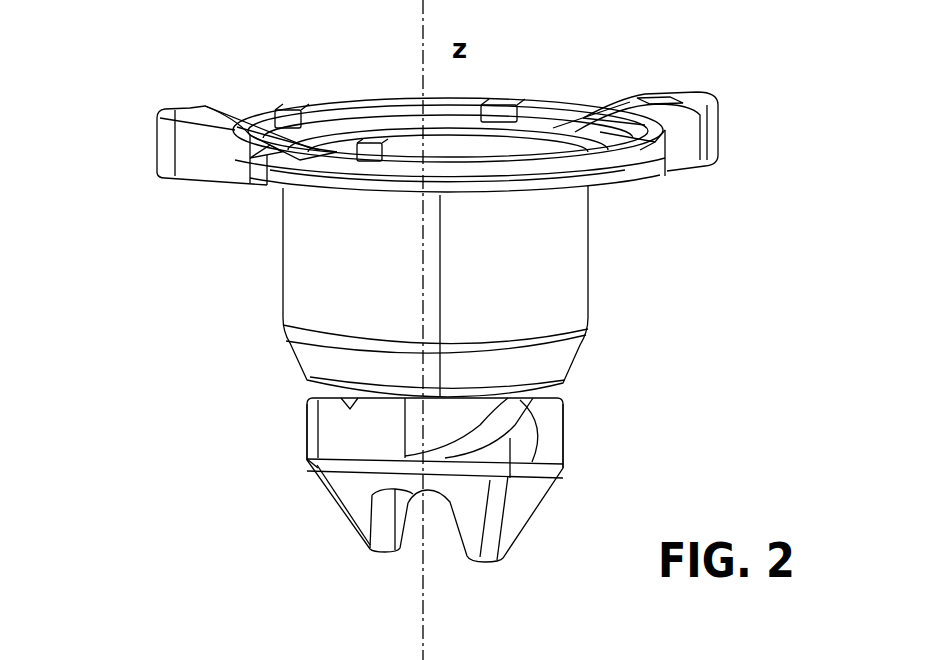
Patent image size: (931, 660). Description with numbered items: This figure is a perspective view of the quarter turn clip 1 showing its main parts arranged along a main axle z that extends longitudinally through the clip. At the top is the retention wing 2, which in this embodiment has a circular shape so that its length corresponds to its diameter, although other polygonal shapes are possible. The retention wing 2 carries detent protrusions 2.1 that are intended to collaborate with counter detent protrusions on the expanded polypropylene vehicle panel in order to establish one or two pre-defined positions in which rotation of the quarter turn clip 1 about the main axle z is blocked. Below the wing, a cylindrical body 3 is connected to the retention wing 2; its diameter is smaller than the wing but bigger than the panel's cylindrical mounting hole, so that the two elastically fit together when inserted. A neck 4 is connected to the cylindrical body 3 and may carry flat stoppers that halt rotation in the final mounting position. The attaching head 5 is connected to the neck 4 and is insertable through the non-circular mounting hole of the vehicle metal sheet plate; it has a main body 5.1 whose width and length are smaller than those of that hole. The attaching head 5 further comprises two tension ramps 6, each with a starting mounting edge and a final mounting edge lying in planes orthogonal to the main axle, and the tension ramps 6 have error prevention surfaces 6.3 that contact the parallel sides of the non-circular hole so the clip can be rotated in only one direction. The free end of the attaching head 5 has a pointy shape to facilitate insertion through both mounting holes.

The quarter turn clip 1 is at (329, 80).
The retention wing 2 is at (290, 172).
The detent protrusion 2.1 is at (155, 144).
The cylindrical body 3 is at (578, 278).
The neck 4 is at (355, 403).
The attaching head 5 is at (632, 488).
The main body 5.1 is at (360, 466).
The tension ramp 6 is at (305, 437).
The error prevention surface 6.3 is at (328, 444).